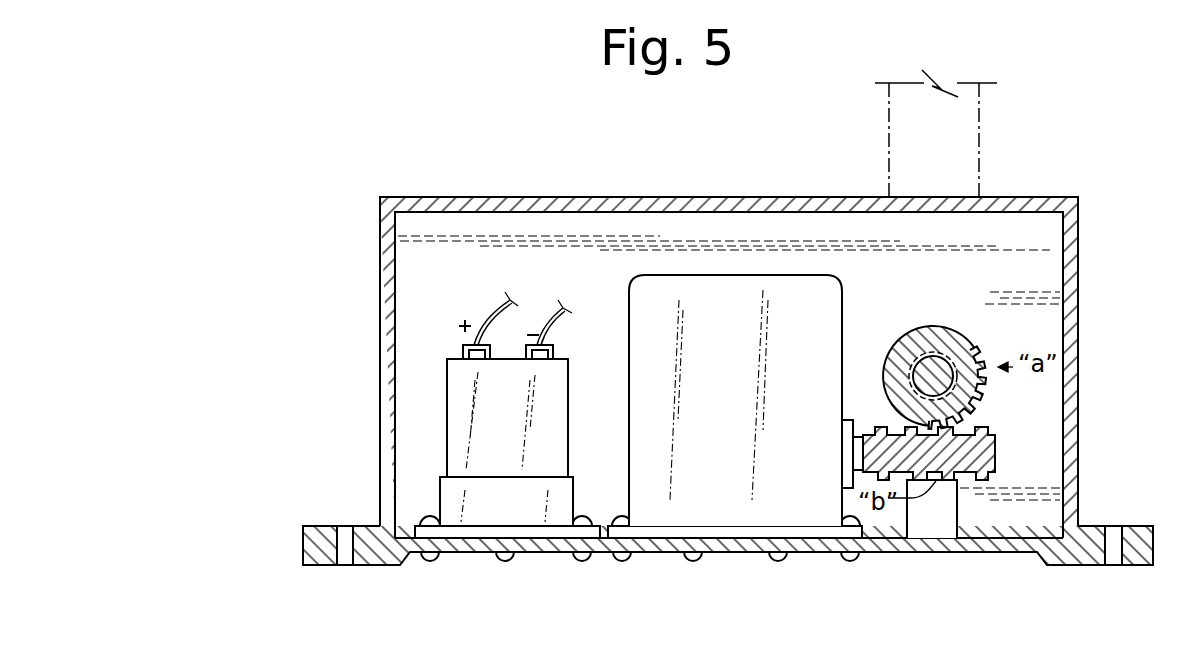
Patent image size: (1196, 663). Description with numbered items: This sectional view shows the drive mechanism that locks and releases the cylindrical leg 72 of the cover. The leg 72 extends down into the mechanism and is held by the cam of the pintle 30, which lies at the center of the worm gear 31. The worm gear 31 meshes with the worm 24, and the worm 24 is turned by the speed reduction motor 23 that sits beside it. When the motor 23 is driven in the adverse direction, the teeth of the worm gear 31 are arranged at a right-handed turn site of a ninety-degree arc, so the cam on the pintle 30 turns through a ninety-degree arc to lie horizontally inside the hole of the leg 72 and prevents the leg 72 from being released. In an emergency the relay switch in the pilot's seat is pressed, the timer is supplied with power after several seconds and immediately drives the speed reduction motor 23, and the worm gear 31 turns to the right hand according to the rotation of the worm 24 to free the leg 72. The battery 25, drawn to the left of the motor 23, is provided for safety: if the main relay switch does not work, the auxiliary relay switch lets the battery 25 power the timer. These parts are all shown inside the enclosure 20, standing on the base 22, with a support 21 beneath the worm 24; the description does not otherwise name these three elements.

The housing 20 is at (1082, 255).
The support block 21 is at (940, 520).
The base plate 22 is at (733, 553).
The speed reduction motor 23 is at (823, 287).
The worm 24 is at (990, 451).
The battery 25 is at (452, 403).
The pintle 30 is at (930, 372).
The worm gear 31 is at (975, 346).
The leg 72 is at (979, 138).